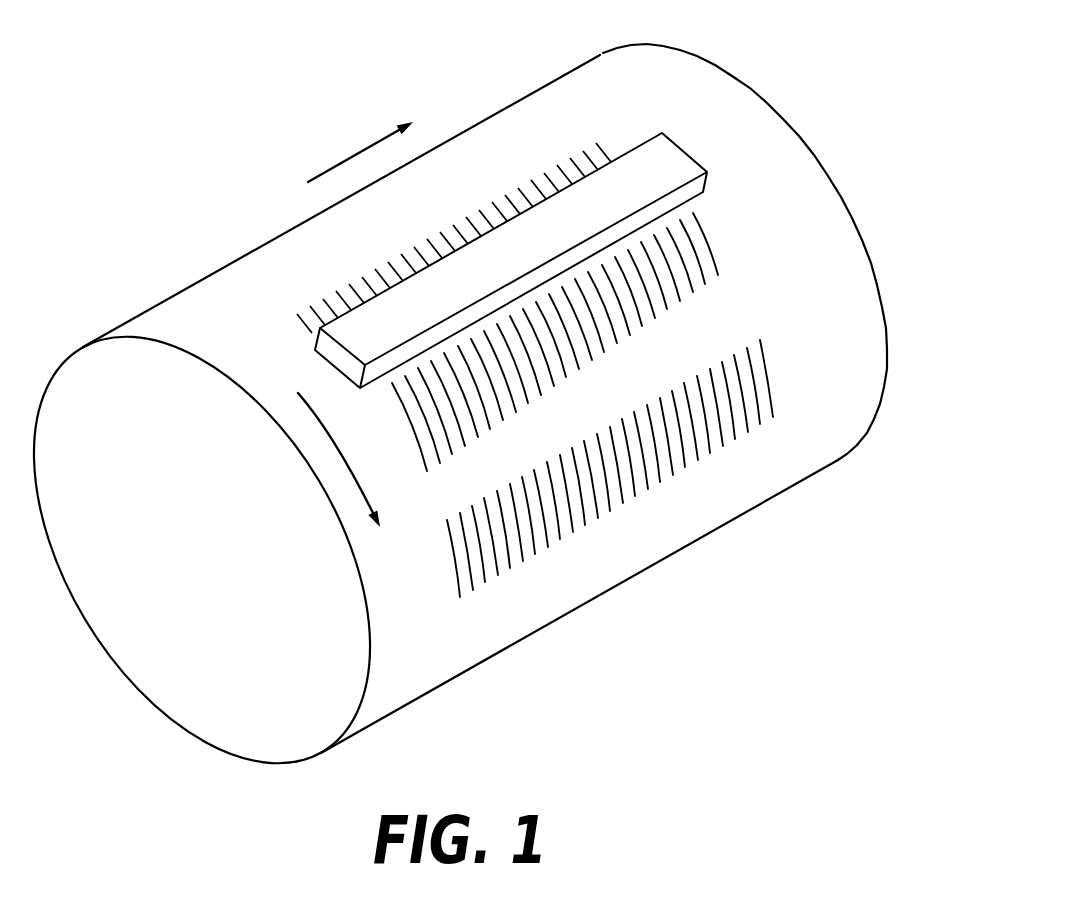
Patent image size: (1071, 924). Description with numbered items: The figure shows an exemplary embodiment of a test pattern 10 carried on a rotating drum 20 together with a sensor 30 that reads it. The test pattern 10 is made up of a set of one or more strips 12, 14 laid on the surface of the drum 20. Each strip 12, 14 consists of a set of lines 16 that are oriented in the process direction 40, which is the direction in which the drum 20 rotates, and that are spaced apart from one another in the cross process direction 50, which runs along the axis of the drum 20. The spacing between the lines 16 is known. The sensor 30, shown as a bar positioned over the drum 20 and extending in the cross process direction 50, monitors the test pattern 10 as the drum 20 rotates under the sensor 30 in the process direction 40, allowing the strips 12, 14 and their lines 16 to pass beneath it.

The test pattern 10 is at (470, 429).
The strip 12 is at (739, 241).
The strip 14 is at (789, 371).
The lines 16 is at (697, 453).
The drum 20 is at (882, 400).
The sensor 30 is at (693, 158).
The process direction 40 is at (333, 432).
The cross process direction 50 is at (357, 148).